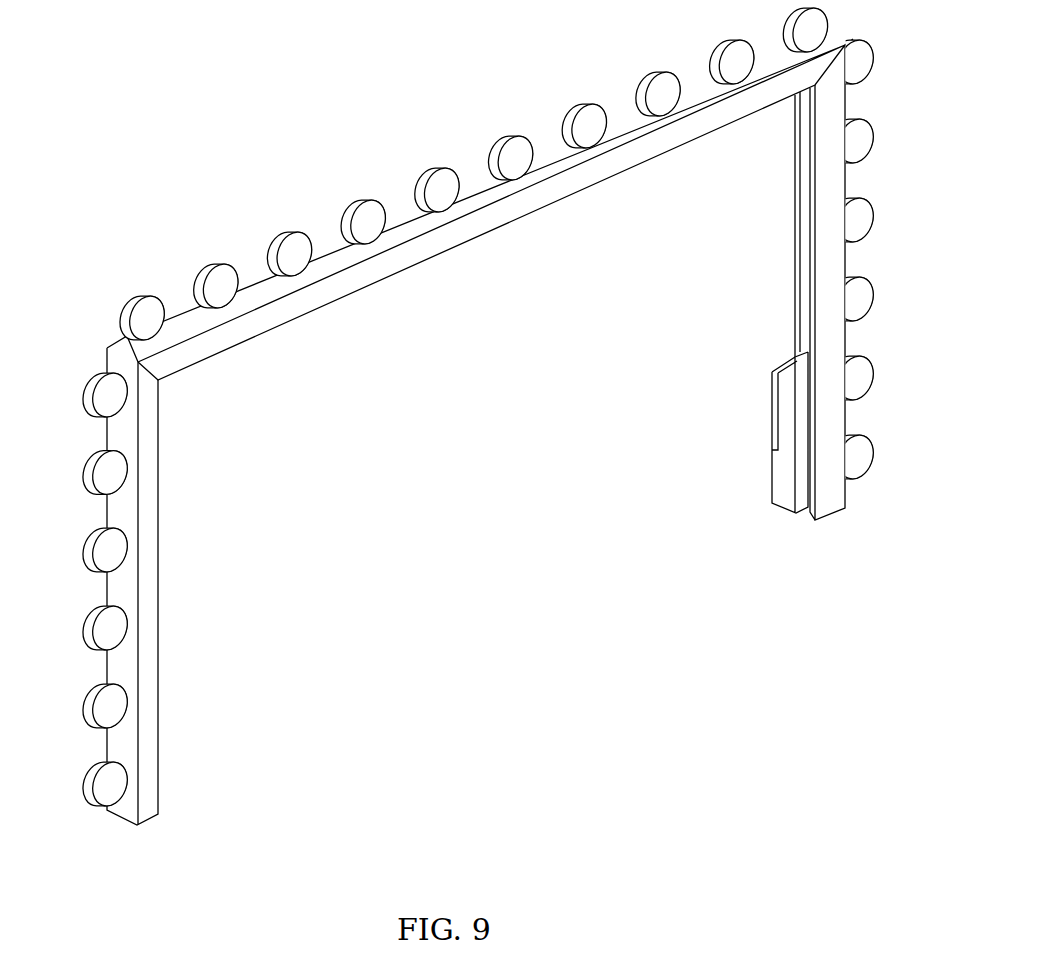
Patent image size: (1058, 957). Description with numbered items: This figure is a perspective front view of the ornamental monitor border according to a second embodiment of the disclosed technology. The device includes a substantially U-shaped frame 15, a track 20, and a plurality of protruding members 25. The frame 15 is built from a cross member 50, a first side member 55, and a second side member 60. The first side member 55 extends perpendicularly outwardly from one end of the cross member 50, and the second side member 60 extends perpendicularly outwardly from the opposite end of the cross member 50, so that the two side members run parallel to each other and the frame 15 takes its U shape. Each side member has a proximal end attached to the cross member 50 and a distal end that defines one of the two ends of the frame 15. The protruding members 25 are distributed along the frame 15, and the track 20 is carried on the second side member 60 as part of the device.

The substantially U-shaped frame 15 is at (476, 414).
The track 20 is at (800, 345).
The protruding members 25 is at (587, 104).
The cross member 50 is at (470, 227).
The first side member 55 is at (118, 512).
The second side member 60 is at (836, 185).